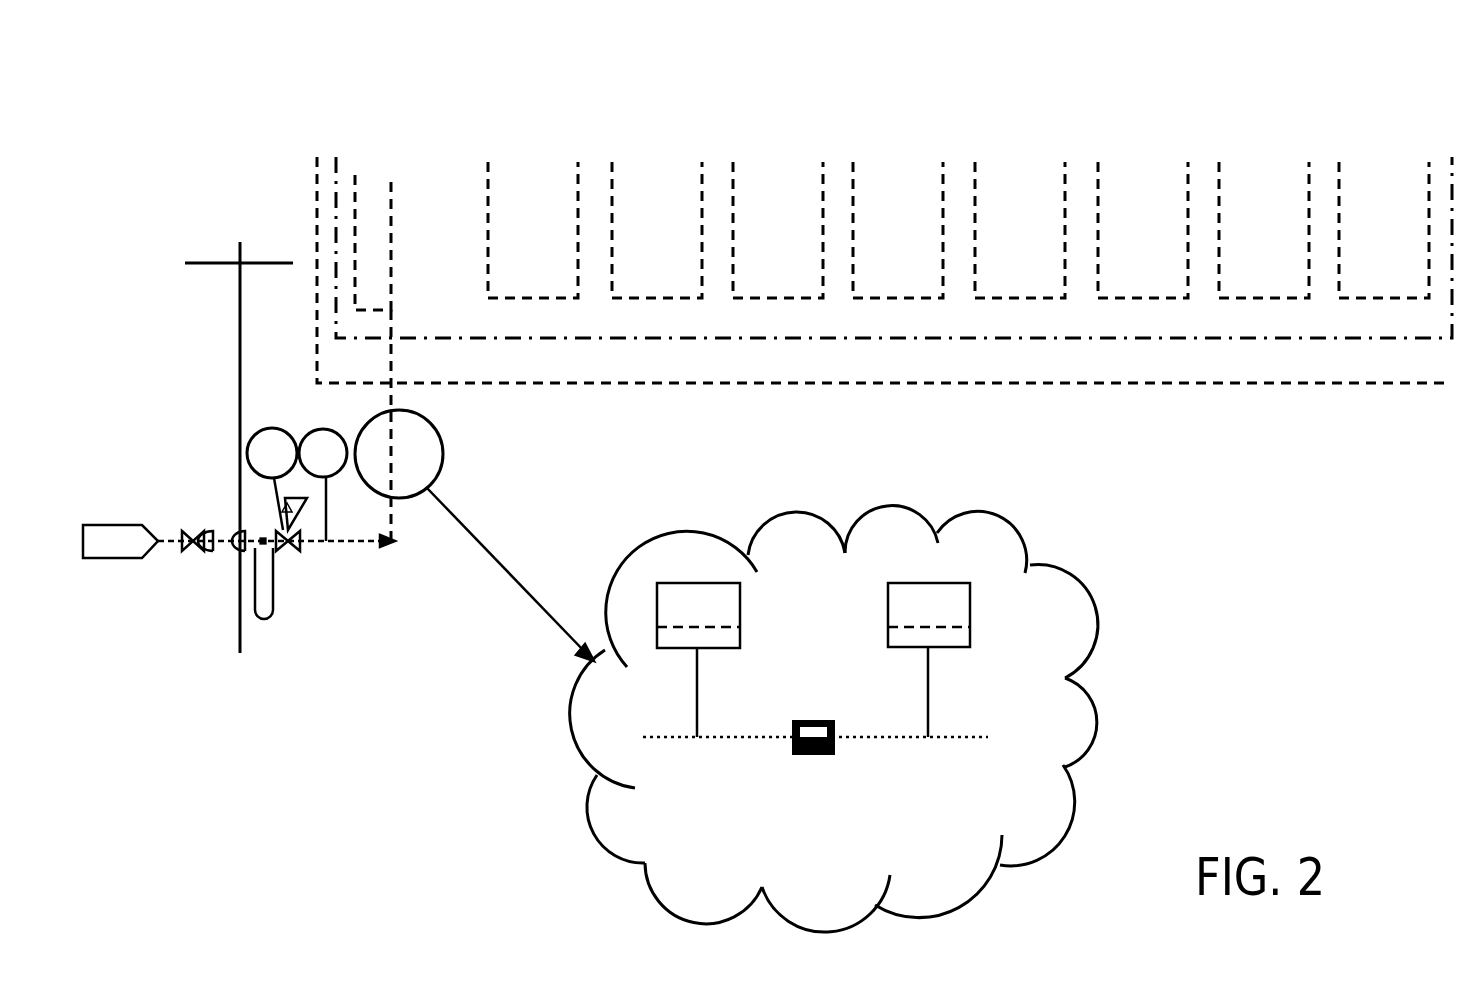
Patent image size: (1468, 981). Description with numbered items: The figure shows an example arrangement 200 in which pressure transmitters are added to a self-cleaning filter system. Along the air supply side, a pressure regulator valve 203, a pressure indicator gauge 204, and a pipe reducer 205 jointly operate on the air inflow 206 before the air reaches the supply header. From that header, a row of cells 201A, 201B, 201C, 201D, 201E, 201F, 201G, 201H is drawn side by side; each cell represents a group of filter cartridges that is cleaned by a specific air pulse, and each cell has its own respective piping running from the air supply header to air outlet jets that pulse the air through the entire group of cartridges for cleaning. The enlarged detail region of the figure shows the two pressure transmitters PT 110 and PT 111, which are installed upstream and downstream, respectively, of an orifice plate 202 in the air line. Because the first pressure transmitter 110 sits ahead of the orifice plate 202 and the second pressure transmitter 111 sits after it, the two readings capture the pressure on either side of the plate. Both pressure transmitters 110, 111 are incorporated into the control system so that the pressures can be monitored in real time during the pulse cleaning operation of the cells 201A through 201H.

The flow measurement system 200 is at (908, 84).
The cell 201A is at (565, 343).
The cell 201B is at (692, 343).
The cell 201C is at (827, 338).
The cell 201D is at (957, 332).
The cell 201E is at (1077, 332).
The cell 201F is at (1183, 338).
The cell 201G is at (1315, 335).
The cell 201H is at (1430, 336).
The orifice plate 202 is at (809, 769).
The pressure regulator valve 203 is at (272, 428).
The pressure indicator gauge 204 is at (330, 430).
The pipe reducer 205 is at (142, 524).
The air inflow 206 is at (263, 622).
The pressure transmitter 110 is at (707, 660).
The pressure transmitter 111 is at (938, 660).